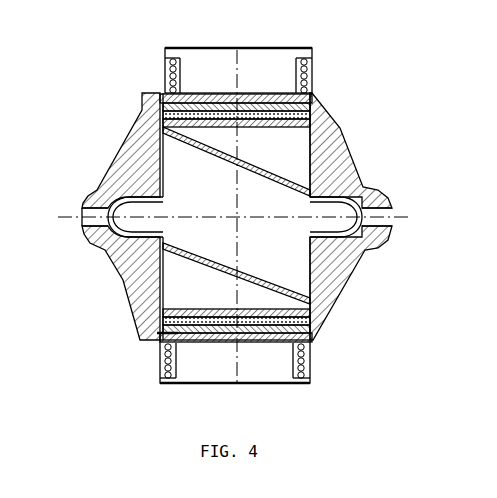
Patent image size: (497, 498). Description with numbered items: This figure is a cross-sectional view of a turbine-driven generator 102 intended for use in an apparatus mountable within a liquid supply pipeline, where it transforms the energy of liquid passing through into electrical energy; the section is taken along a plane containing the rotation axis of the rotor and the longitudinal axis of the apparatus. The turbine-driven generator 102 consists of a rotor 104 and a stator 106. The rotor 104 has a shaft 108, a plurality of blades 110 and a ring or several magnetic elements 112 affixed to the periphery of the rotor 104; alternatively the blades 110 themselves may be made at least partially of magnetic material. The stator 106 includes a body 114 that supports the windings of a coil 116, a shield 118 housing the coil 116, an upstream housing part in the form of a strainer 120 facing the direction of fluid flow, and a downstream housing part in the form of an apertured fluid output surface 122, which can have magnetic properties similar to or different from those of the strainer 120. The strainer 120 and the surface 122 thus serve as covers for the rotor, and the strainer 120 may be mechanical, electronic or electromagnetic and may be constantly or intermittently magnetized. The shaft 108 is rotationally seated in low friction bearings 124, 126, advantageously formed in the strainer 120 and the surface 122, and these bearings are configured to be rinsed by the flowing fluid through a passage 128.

The turbine-driven generator 102 is at (396, 80).
The rotor 104 is at (217, 204).
The stator 106 is at (263, 79).
The shaft 108 is at (363, 170).
The blades 110 is at (278, 178).
The magnetic elements 112 is at (315, 102).
The body 114 is at (298, 48).
The coil 116 is at (313, 68).
The shield 118 is at (183, 48).
The strainer 120 is at (135, 138).
The apertured fluid output surface 122 is at (355, 272).
The low friction bearing 124 is at (357, 160).
The low friction bearing 126 is at (140, 188).
The passage 128 is at (85, 202).